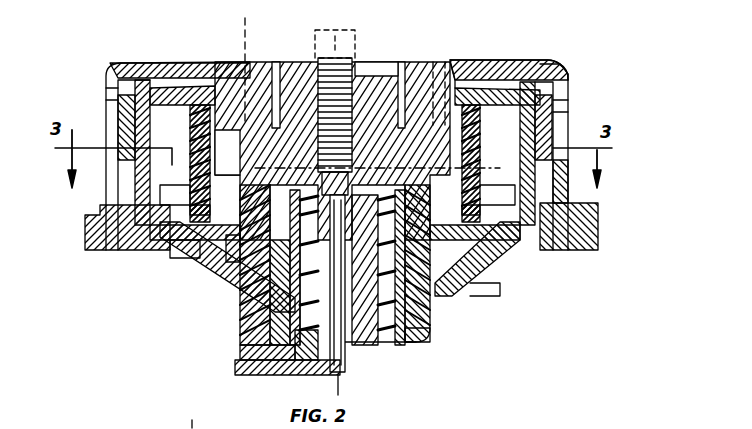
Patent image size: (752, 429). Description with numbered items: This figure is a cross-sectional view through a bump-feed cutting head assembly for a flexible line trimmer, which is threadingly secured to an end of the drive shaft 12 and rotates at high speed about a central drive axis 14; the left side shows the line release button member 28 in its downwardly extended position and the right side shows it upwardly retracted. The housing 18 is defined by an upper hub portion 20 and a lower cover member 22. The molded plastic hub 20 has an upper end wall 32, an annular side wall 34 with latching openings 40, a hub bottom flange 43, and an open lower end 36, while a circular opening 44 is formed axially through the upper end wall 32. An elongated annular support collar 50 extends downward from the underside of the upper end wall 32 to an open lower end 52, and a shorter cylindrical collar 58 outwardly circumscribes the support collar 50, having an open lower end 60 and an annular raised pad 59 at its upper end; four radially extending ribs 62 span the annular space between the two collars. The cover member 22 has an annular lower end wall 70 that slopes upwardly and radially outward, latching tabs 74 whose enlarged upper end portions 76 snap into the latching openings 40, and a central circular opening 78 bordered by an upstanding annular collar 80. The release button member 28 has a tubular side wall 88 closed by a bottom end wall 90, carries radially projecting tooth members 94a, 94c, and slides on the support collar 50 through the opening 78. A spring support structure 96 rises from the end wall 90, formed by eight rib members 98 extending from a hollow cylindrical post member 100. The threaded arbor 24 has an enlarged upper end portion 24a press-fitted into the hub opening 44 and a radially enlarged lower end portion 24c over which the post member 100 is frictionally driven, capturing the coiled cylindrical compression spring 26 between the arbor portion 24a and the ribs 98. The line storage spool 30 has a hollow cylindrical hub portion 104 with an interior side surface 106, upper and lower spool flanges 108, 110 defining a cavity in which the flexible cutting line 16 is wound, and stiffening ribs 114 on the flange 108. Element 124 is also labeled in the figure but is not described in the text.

The drive shaft 12 is at (365, 45).
The central drive axis 14 is at (335, 17).
The flexible cutting line 16 is at (563, 95).
The housing 18 is at (122, 66).
The upper hub portion 20 is at (560, 70).
The lower cover member 22 is at (500, 275).
The threaded arbor 24 is at (415, 60).
The enlarged upper end portion 24a is at (363, 72).
The radially enlarged lower end portion 24c is at (335, 330).
The coiled cylindrical compression spring 26 is at (425, 330).
The line release button member 28 is at (252, 345).
The line storage spool 30 is at (572, 73).
The upper end wall 32 is at (182, 62).
The annular side wall 34 is at (583, 185).
The open lower end 36 is at (105, 250).
The latching openings 40 is at (110, 88).
The hub bottom flange 43 is at (598, 232).
The circular opening 44 is at (303, 72).
The annular support collar 50 is at (245, 305).
The open lower end 52 is at (245, 330).
The cylindrical collar 58 is at (490, 92).
The annular raised pad 59 is at (462, 62).
The open lower end 60 is at (493, 160).
The radially extending ribs 62 is at (245, 28).
The annular lower end wall 70 is at (205, 270).
The latching tabs 74 is at (118, 192).
The enlarged upper end portions 76 is at (120, 118).
The central circular opening 78 is at (452, 292).
The upstanding annular collar 80 is at (205, 292).
The tubular side wall 88 is at (250, 355).
The bottom end wall 90 is at (285, 378).
The tooth member 94a is at (200, 212).
The tooth member 94c is at (496, 205).
The spring support structure 96 is at (250, 375).
The rib members 98 is at (420, 345).
The hollow cylindrical post member 100 is at (392, 320).
The hub portion 104 is at (192, 130).
The interior side surface 106 is at (192, 186).
The upper spool flange 108 is at (505, 95).
The lower spool flange 110 is at (172, 258).
The stiffening ribs 114 is at (170, 85).
The bracket 124 is at (192, 428).